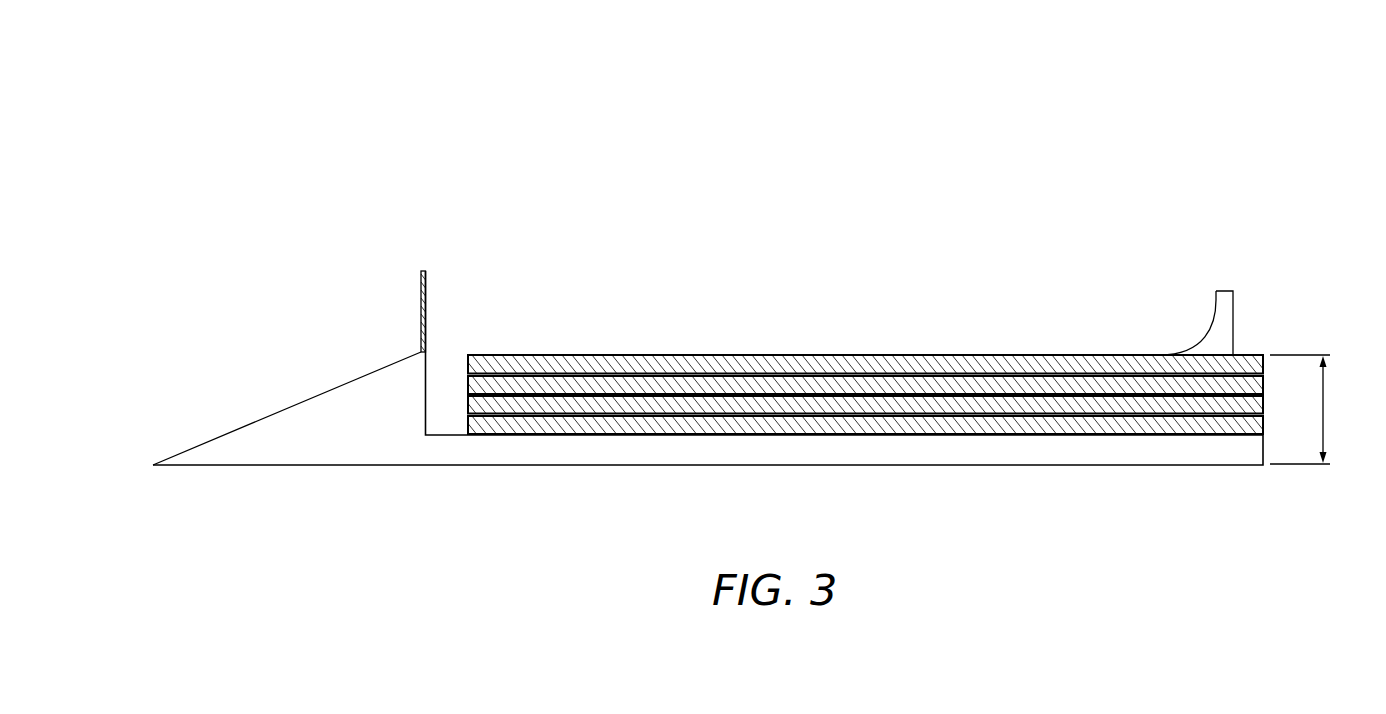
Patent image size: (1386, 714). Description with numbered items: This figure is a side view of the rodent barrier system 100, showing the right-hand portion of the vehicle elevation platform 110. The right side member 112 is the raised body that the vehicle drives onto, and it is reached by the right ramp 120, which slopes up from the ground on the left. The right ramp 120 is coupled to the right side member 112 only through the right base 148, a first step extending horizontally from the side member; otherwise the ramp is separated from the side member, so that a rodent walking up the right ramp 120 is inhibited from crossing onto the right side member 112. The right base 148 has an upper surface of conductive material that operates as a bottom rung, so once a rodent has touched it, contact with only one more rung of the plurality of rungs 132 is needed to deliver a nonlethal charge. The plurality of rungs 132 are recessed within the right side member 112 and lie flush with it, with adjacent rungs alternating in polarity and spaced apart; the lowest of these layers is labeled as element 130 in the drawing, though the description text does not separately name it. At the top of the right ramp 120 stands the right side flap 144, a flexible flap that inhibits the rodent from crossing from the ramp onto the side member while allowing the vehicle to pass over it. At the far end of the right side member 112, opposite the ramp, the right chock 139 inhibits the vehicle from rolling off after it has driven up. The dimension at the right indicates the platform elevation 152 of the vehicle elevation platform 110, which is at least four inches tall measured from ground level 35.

The rodent barrier system 100 is at (750, 305).
The vehicle elevation platform 110 is at (869, 318).
The right side member 112 is at (865, 410).
The right ramp 120 is at (235, 442).
The lower layer 130 is at (977, 428).
The plurality of rungs 132 is at (1053, 412).
The right chock 139 is at (1224, 300).
The right side flap 144 is at (426, 292).
The right base 148 is at (708, 406).
The platform elevation 152 is at (1308, 411).
The ground level 35 is at (1312, 465).